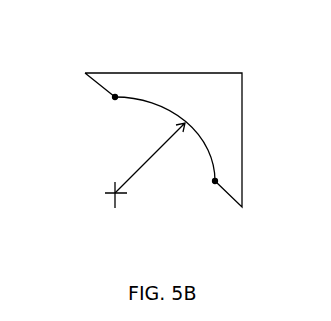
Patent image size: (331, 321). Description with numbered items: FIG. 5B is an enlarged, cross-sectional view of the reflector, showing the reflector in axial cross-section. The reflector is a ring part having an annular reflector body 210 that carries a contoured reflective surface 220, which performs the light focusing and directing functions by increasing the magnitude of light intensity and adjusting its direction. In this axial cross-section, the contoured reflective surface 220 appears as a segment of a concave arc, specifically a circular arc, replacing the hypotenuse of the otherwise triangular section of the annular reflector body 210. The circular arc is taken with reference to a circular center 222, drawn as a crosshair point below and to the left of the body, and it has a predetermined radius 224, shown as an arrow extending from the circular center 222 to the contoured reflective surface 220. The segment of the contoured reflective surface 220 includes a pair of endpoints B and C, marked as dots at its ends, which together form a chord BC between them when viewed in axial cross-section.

The annular reflector body 210 is at (195, 87).
The contoured reflective surface 220 is at (201, 137).
The circular center 222 is at (112, 194).
The predetermined radius 224 is at (150, 158).